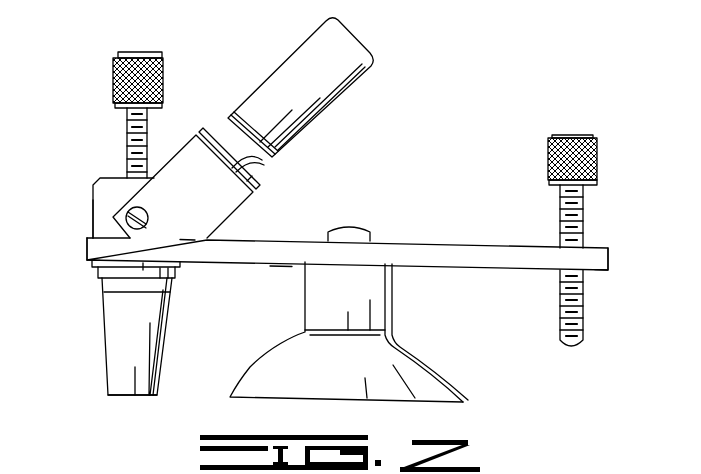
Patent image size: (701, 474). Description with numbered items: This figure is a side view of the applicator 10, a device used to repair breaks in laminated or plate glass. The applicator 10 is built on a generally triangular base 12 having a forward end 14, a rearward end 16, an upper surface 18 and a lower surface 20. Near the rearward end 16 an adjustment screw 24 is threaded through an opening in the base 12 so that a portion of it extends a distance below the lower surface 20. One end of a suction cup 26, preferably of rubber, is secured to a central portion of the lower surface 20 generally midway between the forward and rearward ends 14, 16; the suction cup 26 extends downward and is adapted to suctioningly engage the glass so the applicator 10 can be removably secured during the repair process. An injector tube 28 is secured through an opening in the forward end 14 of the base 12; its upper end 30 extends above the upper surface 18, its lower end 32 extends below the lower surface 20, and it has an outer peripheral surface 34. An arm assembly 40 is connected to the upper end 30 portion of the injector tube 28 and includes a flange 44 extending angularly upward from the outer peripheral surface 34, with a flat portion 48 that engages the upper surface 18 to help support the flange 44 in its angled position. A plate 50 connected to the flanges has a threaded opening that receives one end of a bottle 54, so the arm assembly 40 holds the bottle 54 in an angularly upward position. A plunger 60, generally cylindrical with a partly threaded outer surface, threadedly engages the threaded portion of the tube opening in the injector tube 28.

The applicator 10 is at (447, 83).
The base 12 is at (420, 243).
The forward end 14 is at (87, 247).
The rearward end 16 is at (609, 263).
The upper surface 18 is at (303, 238).
The lower surface 20 is at (280, 262).
The adjustment screw 24 is at (598, 153).
The suction cup 26 is at (393, 312).
The injector tube 28 is at (100, 218).
The upper end 30 is at (97, 179).
The lower end 32 is at (110, 392).
The outer peripheral surface 34 is at (104, 340).
The arm assembly 40 is at (167, 162).
The flange 44 is at (230, 204).
The flat portion 48 is at (186, 246).
The plate 50 is at (213, 147).
The bottle 54 is at (338, 42).
The plunger 60 is at (112, 80).